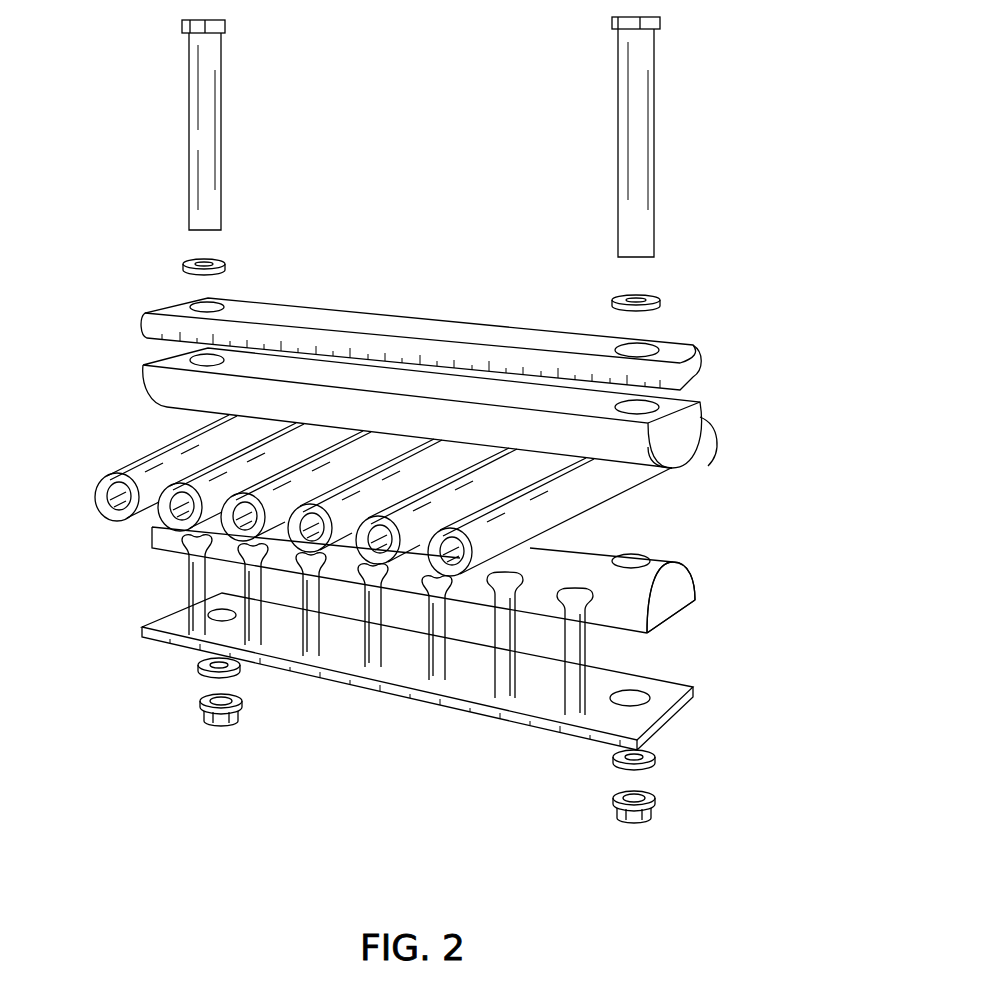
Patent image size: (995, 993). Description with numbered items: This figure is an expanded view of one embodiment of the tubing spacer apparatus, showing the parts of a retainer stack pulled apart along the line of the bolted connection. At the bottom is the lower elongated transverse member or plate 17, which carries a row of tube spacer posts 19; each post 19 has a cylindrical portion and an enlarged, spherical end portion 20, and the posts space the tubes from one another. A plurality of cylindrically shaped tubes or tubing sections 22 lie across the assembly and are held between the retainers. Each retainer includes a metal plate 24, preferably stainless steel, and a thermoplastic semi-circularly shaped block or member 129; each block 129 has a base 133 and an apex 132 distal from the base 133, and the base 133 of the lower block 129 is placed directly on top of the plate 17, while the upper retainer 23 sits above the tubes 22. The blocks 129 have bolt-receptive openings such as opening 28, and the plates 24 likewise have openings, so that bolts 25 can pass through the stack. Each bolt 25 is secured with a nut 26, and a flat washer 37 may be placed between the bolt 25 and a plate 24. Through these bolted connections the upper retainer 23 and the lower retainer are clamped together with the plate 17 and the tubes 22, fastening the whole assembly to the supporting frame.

The plate 17 is at (697, 703).
The tube spacer post 19 is at (592, 716).
The enlarged end portion 20 is at (587, 612).
The tube 22 is at (280, 492).
The upper retainer 23 is at (165, 377).
The plate 24 is at (160, 322).
The bolt 25 is at (208, 51).
The nut 26 is at (660, 805).
The opening 28 is at (648, 559).
The flat washer 37 is at (193, 264).
The thermoplastic semi-circular block 129 is at (690, 437).
The apex of block 129 132 is at (710, 466).
The base of block 129 133 is at (668, 404).